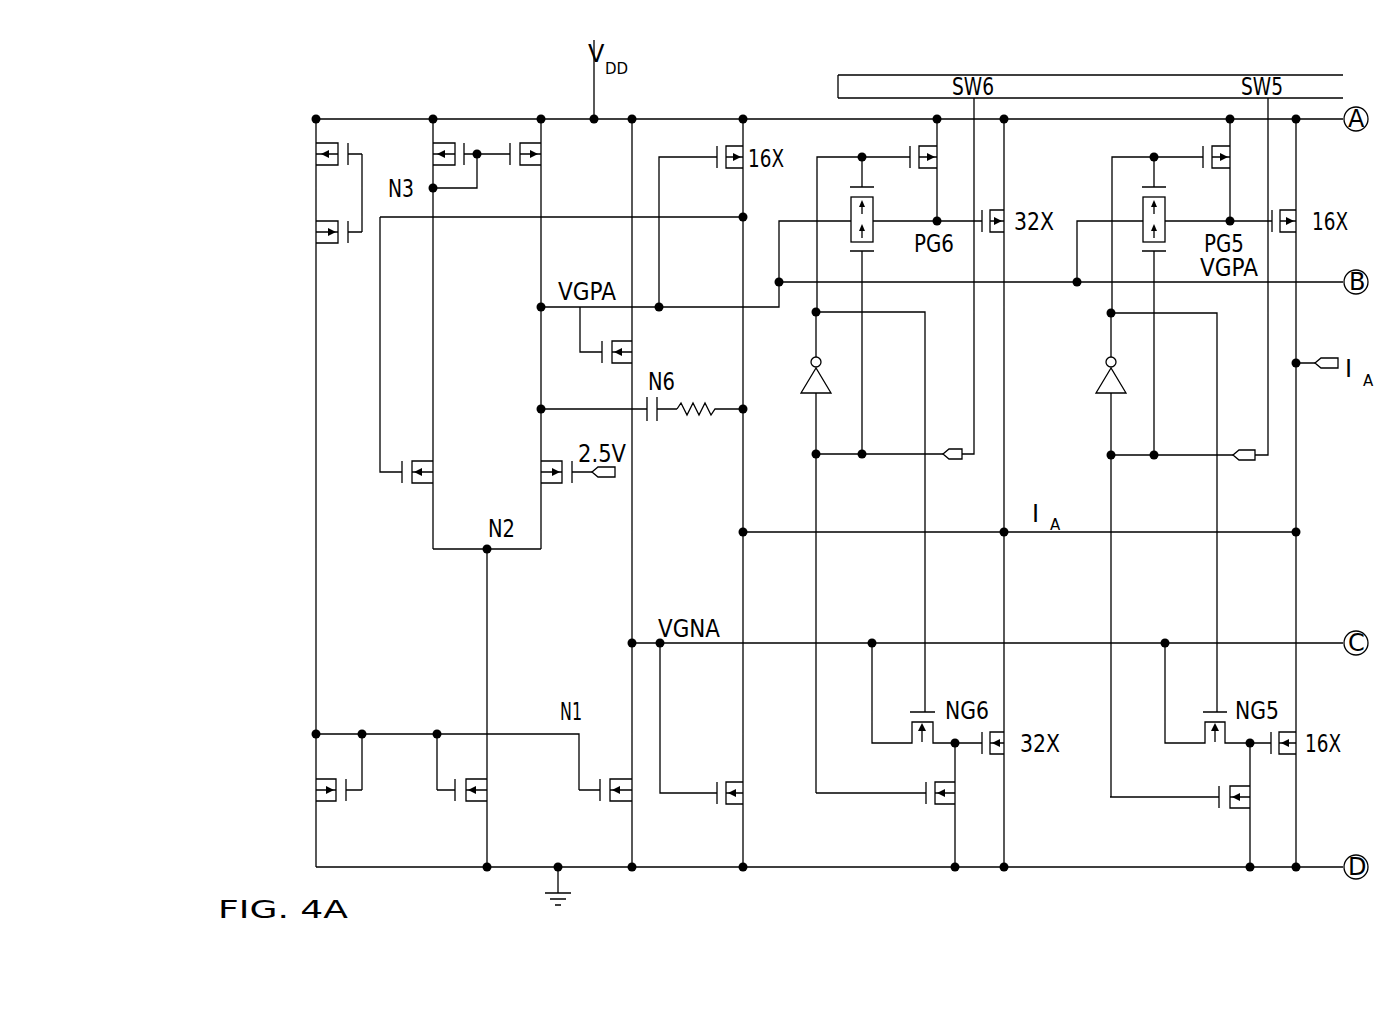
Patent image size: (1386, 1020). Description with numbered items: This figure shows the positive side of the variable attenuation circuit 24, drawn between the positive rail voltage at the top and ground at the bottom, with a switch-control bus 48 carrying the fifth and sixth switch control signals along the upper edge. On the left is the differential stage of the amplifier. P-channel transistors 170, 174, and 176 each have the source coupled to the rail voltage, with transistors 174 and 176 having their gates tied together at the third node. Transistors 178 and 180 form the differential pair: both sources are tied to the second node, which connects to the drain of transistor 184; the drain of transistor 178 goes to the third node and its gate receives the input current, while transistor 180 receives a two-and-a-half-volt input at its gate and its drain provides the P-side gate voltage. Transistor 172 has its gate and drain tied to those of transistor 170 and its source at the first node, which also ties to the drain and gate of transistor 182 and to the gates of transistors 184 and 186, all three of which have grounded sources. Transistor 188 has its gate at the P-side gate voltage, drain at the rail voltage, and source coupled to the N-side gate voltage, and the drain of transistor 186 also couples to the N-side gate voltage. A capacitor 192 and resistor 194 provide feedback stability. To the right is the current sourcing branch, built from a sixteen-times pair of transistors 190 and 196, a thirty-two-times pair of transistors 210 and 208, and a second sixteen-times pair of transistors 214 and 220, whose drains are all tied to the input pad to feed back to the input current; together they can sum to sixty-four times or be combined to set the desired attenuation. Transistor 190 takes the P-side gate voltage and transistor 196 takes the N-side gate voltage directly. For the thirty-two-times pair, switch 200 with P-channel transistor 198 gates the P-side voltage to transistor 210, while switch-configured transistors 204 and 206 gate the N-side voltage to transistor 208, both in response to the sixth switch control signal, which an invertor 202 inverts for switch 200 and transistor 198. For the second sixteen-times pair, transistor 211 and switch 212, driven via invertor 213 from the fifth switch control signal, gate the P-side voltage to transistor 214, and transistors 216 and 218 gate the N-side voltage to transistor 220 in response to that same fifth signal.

The variable attenuation circuit 24 is at (714, 84).
The switch control bus 48 is at (838, 72).
The P-channel transistor 170 is at (349, 146).
The N-channel transistor 172 is at (348, 243).
The P-channel transistor 174 is at (464, 147).
The P-channel transistor 176 is at (510, 167).
The N-channel transistor 178 is at (400, 484).
The N-channel transistor 180 is at (575, 485).
The N-channel transistor 182 is at (347, 800).
The N-channel transistor 184 is at (452, 780).
The N-channel transistor 186 is at (597, 801).
The N-channel transistor 188 is at (601, 354).
The P-channel transistor 190 is at (722, 168).
The capacitor 192 is at (655, 422).
The resistor 194 is at (692, 402).
The N-channel transistor 196 is at (718, 805).
The P-channel transistor 198 is at (906, 168).
The switch 200 is at (873, 198).
The invertor 202 is at (801, 383).
The switch-configured transistor 204 is at (928, 712).
The switch-configured transistor 206 is at (925, 803).
The N-channel transistor 208 is at (982, 750).
The P-channel transistor 210 is at (985, 212).
The transistor 211 is at (1199, 168).
The switch 212 is at (1165, 198).
The invertor 213 is at (1097, 382).
The P-channel transistor 214 is at (1275, 212).
The transistor 216 is at (1225, 712).
The transistor 218 is at (1217, 808).
The N-channel transistor 220 is at (1271, 754).